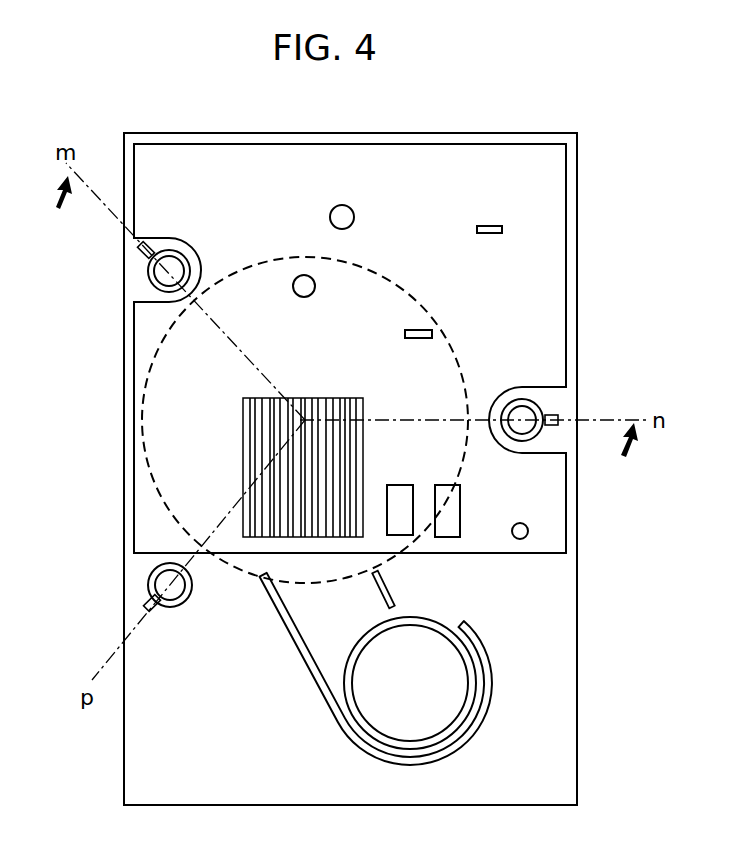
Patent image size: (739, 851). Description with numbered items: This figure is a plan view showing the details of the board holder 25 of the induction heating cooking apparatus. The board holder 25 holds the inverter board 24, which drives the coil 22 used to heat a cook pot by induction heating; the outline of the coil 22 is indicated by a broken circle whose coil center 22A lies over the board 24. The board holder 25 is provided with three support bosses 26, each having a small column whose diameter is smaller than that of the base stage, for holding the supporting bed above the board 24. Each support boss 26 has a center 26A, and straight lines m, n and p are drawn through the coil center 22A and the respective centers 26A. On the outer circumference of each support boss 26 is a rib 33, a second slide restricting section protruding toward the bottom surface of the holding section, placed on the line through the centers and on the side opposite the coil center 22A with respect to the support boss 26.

The coil 22 is at (388, 285).
The coil center 22A is at (312, 420).
The inverter board 24 is at (520, 300).
The board holder 25 is at (535, 634).
The support boss 26 is at (149, 268).
The center of support boss 26A is at (150, 276).
The rib 33 is at (148, 242).